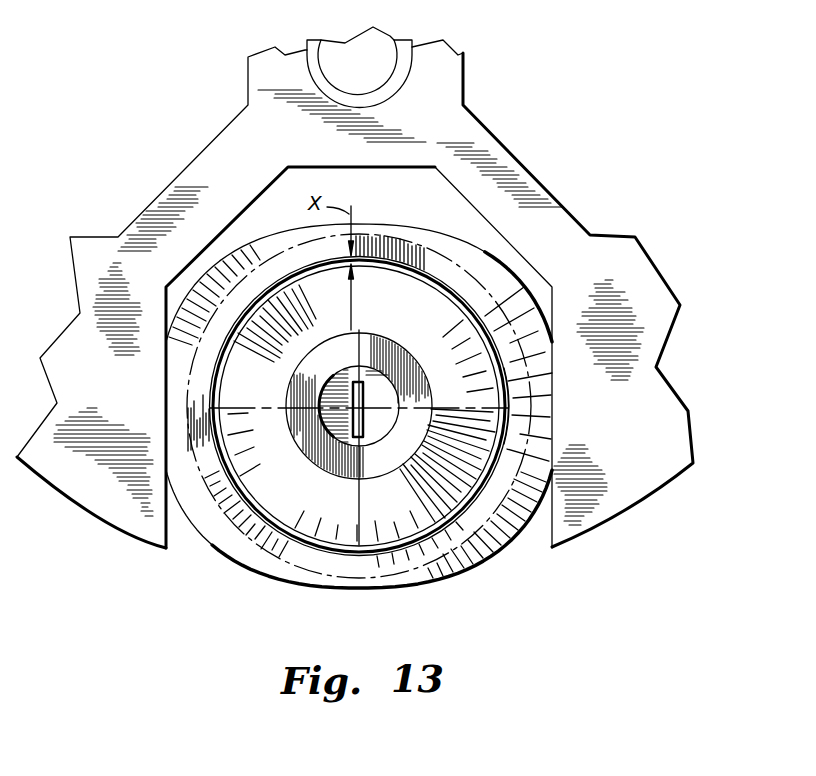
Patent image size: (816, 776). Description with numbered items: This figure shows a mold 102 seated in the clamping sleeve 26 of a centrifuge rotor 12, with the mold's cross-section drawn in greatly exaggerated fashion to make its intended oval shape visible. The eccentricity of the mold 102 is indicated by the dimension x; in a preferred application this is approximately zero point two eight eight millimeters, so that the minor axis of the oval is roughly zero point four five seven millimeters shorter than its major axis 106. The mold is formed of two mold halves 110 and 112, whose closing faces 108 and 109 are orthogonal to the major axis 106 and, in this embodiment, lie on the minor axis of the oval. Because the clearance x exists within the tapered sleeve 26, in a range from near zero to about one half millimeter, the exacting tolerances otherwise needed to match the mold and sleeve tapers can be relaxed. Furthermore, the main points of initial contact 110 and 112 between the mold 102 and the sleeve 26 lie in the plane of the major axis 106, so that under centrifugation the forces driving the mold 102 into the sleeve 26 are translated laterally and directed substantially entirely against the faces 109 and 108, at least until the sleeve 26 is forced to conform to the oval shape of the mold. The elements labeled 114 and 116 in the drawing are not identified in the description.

The centrifuge rotor 12 is at (588, 221).
The clamping sleeve 26 is at (508, 548).
The mold 102 is at (287, 498).
The major axis 106 is at (257, 410).
The closing face 108 is at (360, 312).
The closing face 109 is at (362, 345).
The mold half 110 is at (402, 552).
The mold half 112 is at (305, 540).
The right lip portion 114 is at (506, 403).
The left lip portion 116 is at (210, 410).